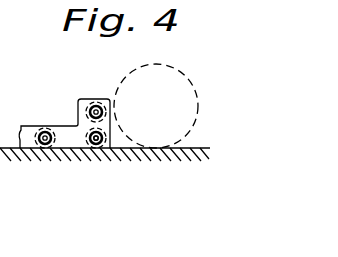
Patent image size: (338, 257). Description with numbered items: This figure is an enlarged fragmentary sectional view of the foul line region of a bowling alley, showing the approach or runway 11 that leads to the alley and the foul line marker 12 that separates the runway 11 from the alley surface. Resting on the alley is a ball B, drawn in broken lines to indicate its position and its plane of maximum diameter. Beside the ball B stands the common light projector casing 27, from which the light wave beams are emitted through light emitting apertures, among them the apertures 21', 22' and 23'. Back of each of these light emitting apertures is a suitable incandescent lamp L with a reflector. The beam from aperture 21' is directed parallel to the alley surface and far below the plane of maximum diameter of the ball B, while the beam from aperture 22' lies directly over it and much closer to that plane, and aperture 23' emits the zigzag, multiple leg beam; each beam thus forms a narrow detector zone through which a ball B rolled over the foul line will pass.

The approach or runway 11 is at (204, 148).
The ball B is at (201, 59).
The light projector casing 27 is at (37, 110).
The incandescent lamp L is at (84, 100).
The light emitting aperture 22' is at (100, 94).
The light emitting aperture 21' is at (74, 167).
The light emitting aperture 23' is at (33, 155).
The foul line marker 12 is at (96, 148).